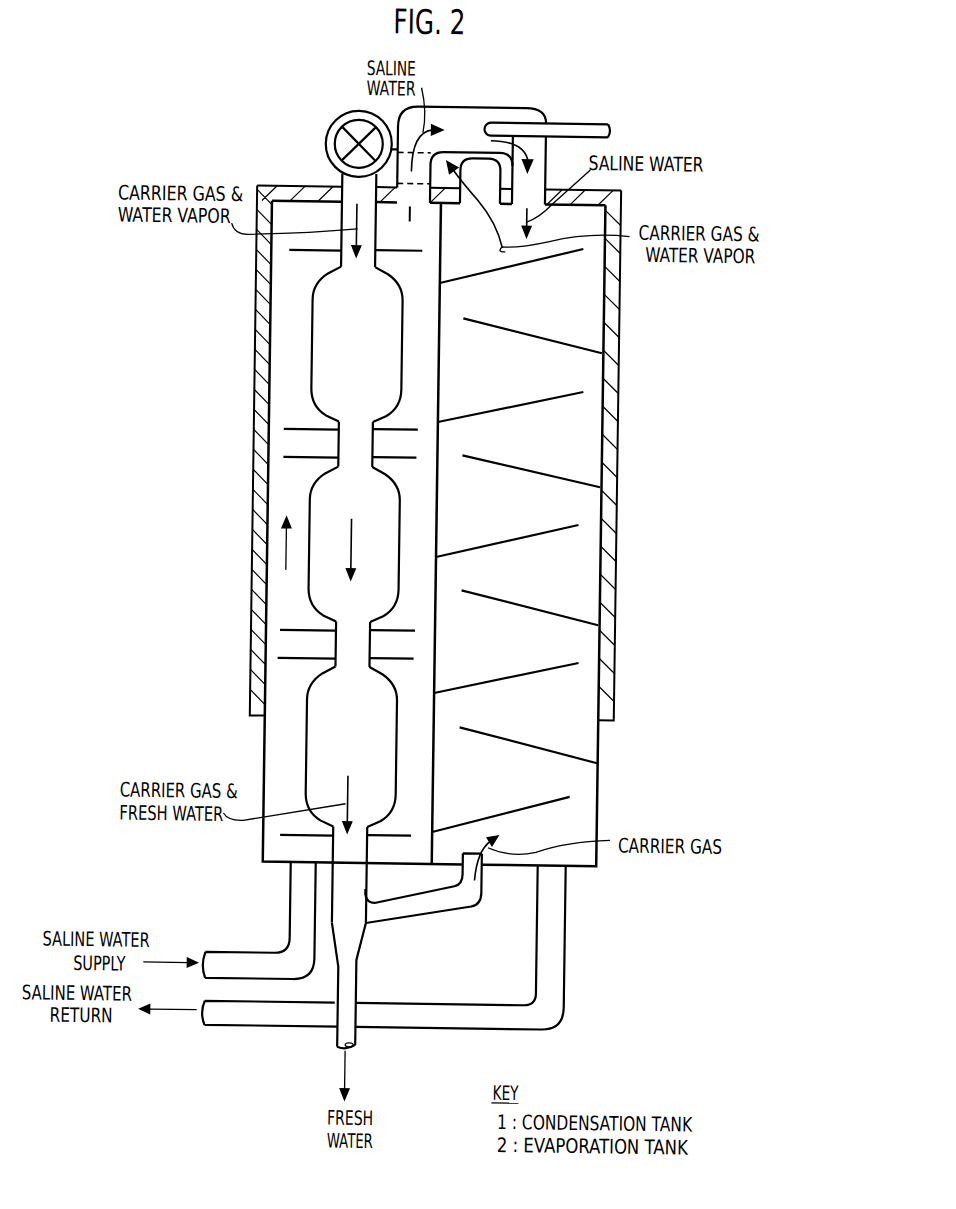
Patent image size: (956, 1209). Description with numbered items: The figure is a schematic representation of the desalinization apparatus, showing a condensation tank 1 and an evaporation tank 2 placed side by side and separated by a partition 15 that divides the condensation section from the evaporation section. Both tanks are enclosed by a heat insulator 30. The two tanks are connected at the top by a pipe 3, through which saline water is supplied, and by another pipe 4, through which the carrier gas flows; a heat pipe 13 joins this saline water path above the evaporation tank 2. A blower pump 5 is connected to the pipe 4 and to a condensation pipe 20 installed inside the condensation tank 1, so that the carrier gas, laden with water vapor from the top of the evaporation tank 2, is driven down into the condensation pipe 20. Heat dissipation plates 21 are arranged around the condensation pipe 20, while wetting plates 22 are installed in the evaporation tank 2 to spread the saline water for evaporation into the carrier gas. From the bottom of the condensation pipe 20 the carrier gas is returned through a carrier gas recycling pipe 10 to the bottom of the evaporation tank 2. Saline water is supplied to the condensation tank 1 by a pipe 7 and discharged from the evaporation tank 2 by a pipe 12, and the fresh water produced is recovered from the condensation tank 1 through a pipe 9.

The condensation tank 1 is at (297, 608).
The evaporation tank 2 is at (518, 508).
The pipe 3 is at (533, 145).
The pipe 4 is at (472, 162).
The blower pump 5 is at (354, 113).
The pipe 7 is at (300, 896).
The pipe 9 is at (368, 978).
The carrier gas recycling pipe 10 is at (509, 879).
The pipe 12 is at (571, 960).
The heat pipe 13 is at (593, 122).
The partition 15 is at (442, 385).
The condensation pipe 20 is at (365, 342).
The heat dissipation plate 21 is at (298, 426).
The wetting plate 22 is at (575, 341).
The heat insulator 30 is at (262, 500).